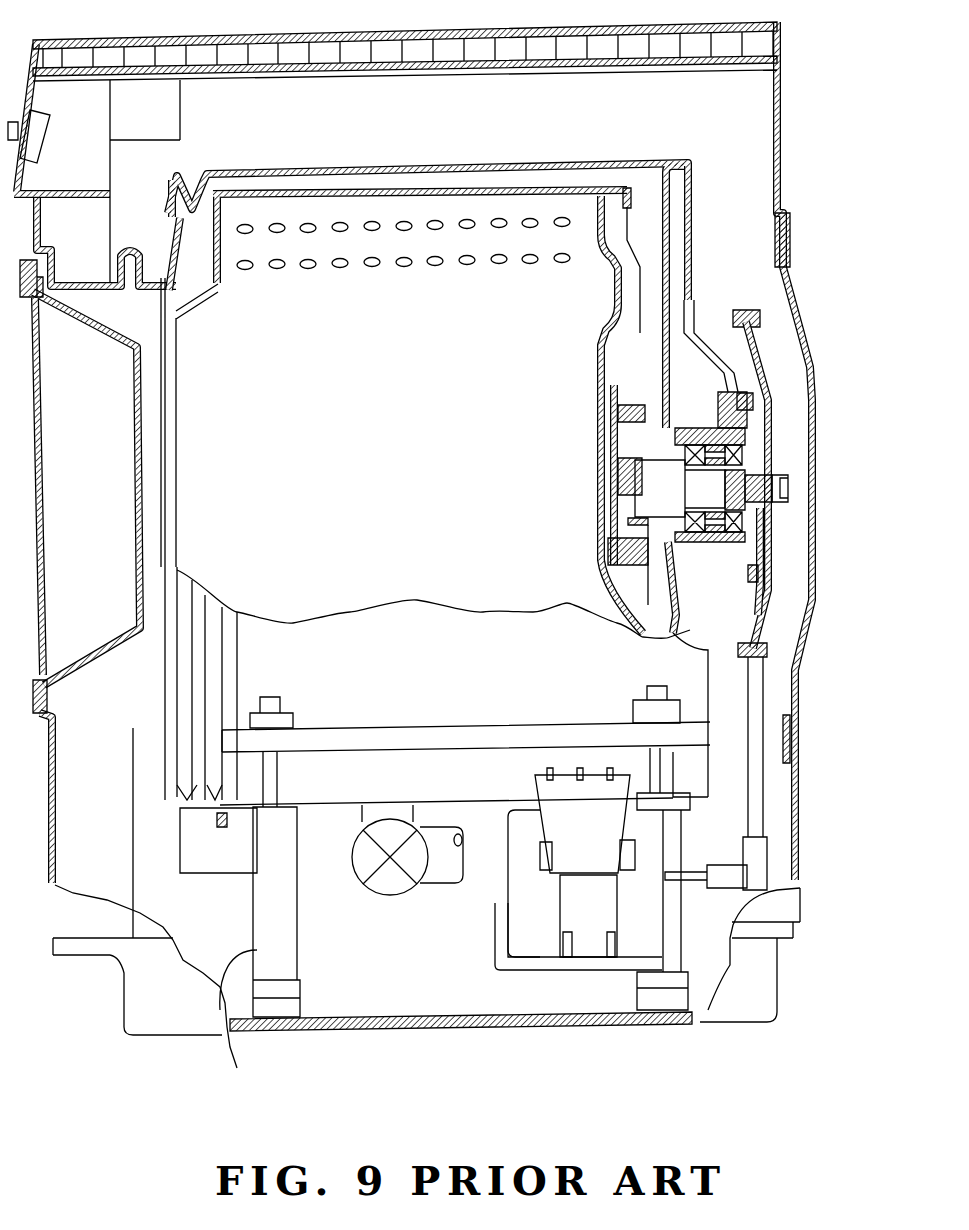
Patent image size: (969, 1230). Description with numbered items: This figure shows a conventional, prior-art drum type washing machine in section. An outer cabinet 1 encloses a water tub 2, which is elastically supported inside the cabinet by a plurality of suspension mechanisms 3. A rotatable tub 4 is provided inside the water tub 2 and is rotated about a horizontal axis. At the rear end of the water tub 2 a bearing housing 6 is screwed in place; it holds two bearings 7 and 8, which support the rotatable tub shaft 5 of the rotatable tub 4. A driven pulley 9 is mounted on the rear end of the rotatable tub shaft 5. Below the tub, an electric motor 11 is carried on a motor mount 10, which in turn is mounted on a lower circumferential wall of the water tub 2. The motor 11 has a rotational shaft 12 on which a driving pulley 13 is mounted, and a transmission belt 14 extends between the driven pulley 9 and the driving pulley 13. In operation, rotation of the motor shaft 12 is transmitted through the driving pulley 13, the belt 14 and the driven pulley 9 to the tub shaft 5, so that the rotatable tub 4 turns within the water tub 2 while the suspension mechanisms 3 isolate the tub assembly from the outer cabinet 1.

The outer cabinet 1 is at (782, 93).
The water tub 2 is at (517, 160).
The suspension mechanisms 3 is at (237, 1068).
The rotatable tub 4 is at (384, 195).
The rotatable tub shaft 5 is at (650, 447).
The bearing housing 6 is at (727, 377).
The bearing 7 is at (685, 555).
The bearing 8 is at (752, 555).
The driven pulley 9 is at (775, 422).
The motor mount 10 is at (557, 820).
The electric motor 11 is at (493, 937).
The rotational shaft 12 is at (692, 878).
The driving pulley 13 is at (777, 862).
The transmission belt 14 is at (762, 748).